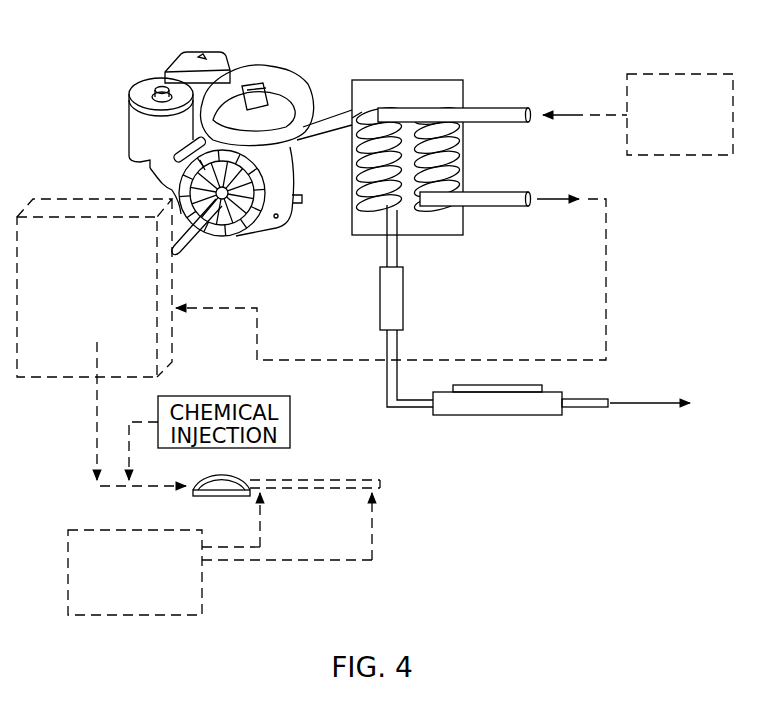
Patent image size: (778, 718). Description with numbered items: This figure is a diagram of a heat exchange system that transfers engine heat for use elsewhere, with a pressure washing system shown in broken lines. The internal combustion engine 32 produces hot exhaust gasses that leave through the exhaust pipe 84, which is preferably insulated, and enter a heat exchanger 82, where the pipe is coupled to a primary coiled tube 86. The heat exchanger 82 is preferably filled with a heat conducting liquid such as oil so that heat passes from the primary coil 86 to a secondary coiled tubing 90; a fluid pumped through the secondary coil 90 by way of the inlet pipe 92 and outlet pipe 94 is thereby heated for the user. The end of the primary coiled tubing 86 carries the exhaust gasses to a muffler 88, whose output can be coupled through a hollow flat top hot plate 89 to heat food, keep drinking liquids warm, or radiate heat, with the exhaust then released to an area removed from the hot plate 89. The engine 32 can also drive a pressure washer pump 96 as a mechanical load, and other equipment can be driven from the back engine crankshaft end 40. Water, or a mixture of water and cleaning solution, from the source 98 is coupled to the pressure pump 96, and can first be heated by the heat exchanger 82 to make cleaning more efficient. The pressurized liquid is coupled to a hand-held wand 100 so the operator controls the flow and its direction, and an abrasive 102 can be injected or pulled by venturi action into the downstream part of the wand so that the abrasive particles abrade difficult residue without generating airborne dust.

The internal combustion engine 32 is at (258, 49).
The back engine crankshaft end 40 is at (200, 238).
The heat exchanger 82 is at (407, 80).
The exhaust pipe 84 is at (325, 120).
The primary coiled tube 86 is at (362, 166).
The muffler 88 is at (403, 298).
The hollow flat top hot plate 89 is at (508, 385).
The secondary coiled tubing 90 is at (452, 150).
The inlet pipe 92 is at (500, 108).
The outlet pipe 94 is at (508, 208).
The pressure washer pump 96 is at (100, 208).
The source of water or water and cleaning solution 98 is at (666, 74).
The hand-held wand 100 is at (338, 478).
The abrasive 102 is at (204, 583).